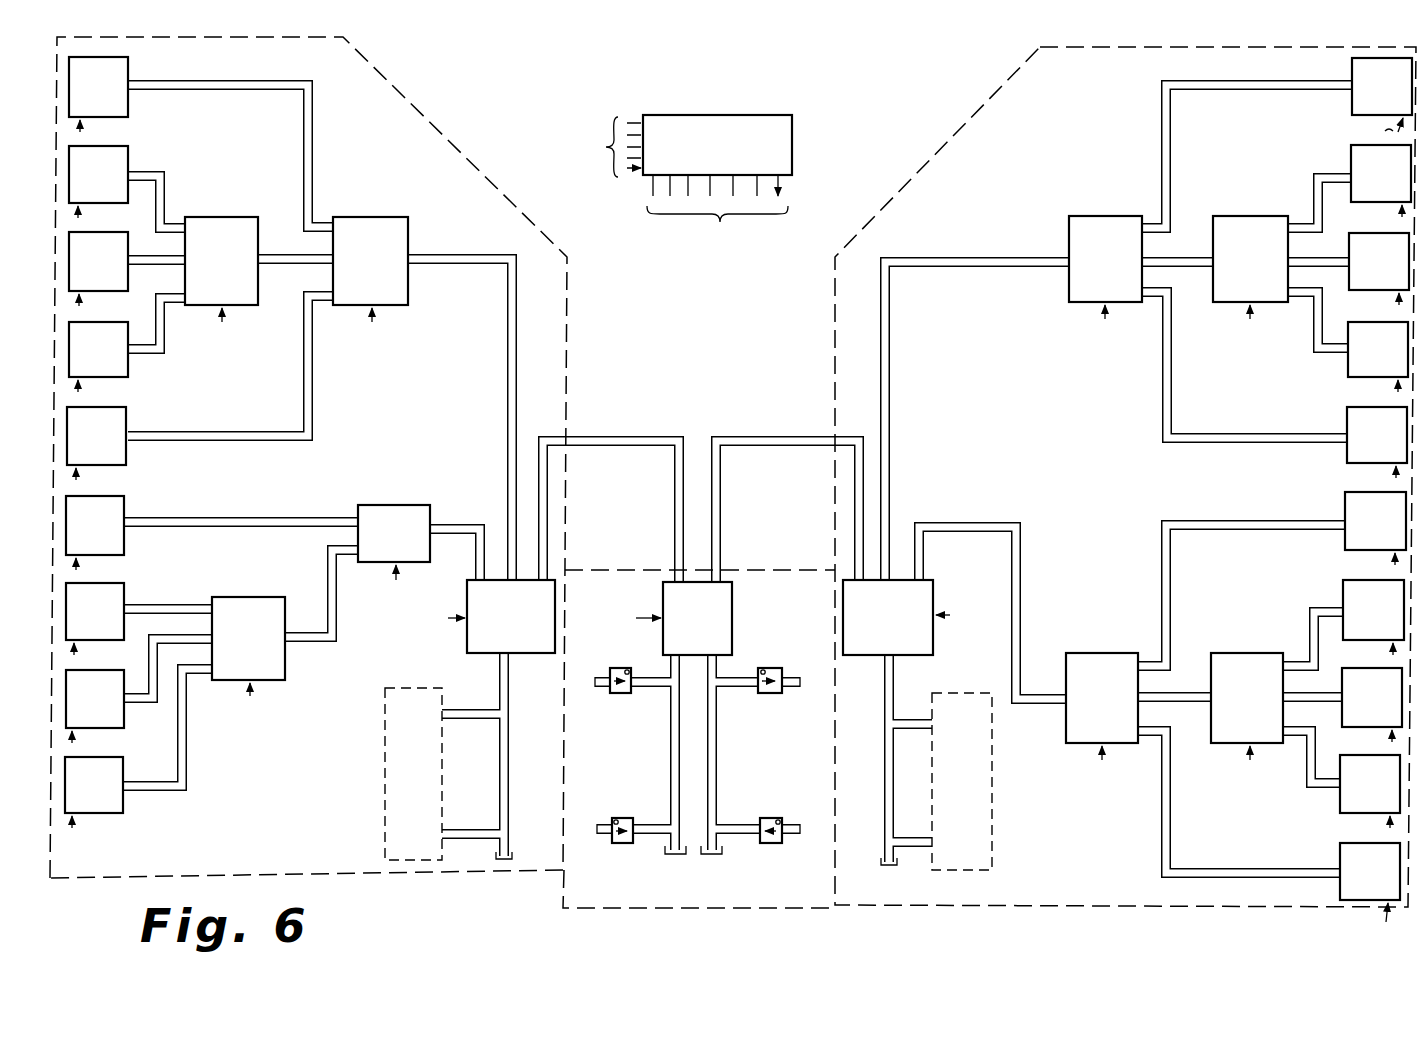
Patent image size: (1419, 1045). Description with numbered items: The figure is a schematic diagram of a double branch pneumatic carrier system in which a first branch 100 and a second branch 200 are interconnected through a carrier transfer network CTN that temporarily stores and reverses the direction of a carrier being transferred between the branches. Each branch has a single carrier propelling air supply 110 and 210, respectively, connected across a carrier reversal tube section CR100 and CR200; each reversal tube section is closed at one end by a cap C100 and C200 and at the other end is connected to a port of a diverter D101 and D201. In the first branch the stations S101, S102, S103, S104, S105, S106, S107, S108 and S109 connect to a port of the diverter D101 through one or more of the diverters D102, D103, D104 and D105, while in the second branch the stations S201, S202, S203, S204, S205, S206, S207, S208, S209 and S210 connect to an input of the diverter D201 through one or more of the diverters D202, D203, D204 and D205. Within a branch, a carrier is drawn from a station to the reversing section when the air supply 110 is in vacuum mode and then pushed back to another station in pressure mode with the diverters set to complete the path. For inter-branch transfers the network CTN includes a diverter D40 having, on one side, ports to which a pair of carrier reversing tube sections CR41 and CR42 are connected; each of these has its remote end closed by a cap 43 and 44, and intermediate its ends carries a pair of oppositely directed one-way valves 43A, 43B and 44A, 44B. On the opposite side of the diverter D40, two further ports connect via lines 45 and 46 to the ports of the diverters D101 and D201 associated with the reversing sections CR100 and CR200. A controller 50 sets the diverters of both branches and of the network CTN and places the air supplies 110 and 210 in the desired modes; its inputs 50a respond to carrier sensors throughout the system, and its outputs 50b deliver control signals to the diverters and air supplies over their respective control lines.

The controller 50 is at (796, 113).
The inputs 50a is at (602, 148).
The outputs 50b is at (720, 224).
The first branch 100 is at (411, 92).
The second branch 200 is at (996, 97).
The line 45 is at (608, 441).
The line 46 is at (748, 441).
The carrier transfer network CTN is at (665, 566).
The cap 43 is at (664, 856).
The cap 44 is at (720, 853).
The one-way valve 43A is at (619, 845).
The one-way valve 43B is at (620, 668).
The one-way valve 44A is at (786, 847).
The one-way valve 44B is at (783, 660).
The carrier reversing tube section CR41 is at (671, 775).
The carrier reversing tube section CR42 is at (716, 803).
The carrier reversal tube section CR100 is at (509, 790).
The carrier reversal tube section CR200 is at (885, 777).
The carrier propelling air supply 110 is at (383, 753).
The carrier propelling air supply 210 is at (994, 814).
The cap C100 is at (500, 860).
The cap C200 is at (882, 866).
The diverter D40 is at (669, 618).
The diverter D101 is at (488, 616).
The diverter D102 is at (370, 280).
The diverter D103 is at (394, 553).
The diverter D104 is at (248, 656).
The diverter D105 is at (221, 280).
The diverter D201 is at (908, 617).
The diverter D202 is at (1105, 278).
The diverter D203 is at (1250, 278).
The diverter D204 is at (1102, 716).
The diverter D205 is at (1247, 716).
The station S101 is at (98, 98).
The station S102 is at (98, 182).
The station S103 is at (98, 269).
The station S104 is at (98, 357).
The station S105 is at (96, 443).
The station S106 is at (95, 533).
The station S107 is at (95, 619).
The station S108 is at (95, 706).
The station S109 is at (92, 805).
The station S201 is at (1382, 99).
The station S202 is at (1381, 181).
The station S203 is at (1379, 269).
The station S204 is at (1378, 357).
The station S205 is at (1377, 442).
The station S206 is at (1375, 528).
The station S207 is at (1373, 617).
The station S208 is at (1372, 705).
The station S209 is at (1370, 791).
The station S210 is at (1370, 893).